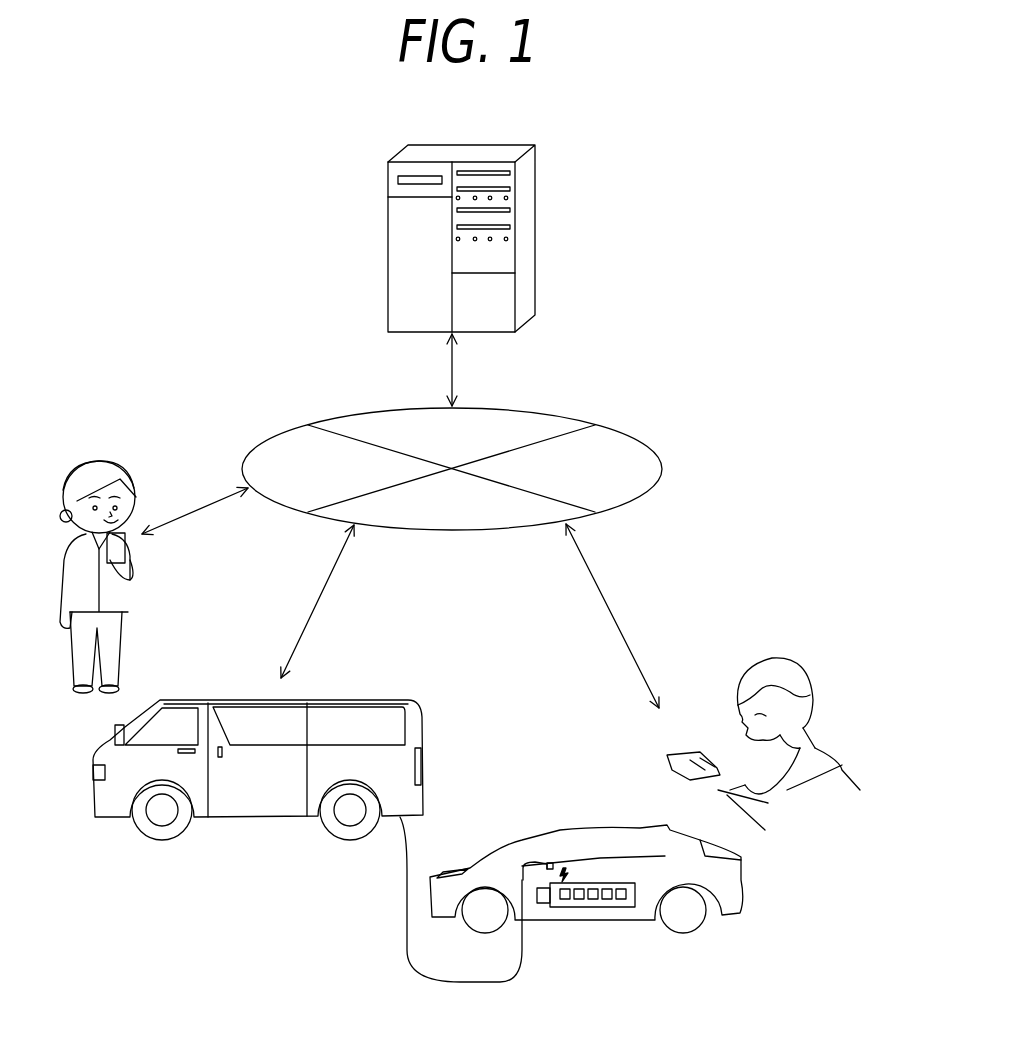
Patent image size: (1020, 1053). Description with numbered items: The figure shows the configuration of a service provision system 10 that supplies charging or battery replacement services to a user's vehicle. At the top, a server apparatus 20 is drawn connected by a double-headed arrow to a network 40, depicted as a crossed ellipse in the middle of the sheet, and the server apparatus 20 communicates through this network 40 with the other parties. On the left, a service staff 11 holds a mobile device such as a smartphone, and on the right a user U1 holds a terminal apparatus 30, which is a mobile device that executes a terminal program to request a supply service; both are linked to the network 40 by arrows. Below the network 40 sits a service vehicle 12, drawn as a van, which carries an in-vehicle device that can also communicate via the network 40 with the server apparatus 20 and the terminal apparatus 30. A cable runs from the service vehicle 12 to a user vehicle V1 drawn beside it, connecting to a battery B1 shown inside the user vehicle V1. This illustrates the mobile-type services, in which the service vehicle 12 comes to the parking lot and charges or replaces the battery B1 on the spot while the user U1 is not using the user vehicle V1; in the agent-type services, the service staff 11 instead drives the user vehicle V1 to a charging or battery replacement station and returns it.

The service provision system 10 is at (692, 296).
The service staff 11 is at (127, 577).
The service vehicle 12 is at (266, 805).
The server apparatus 20 is at (388, 245).
The terminal apparatus 30 is at (678, 767).
The network 40 is at (662, 469).
The battery B1 is at (595, 883).
The user U1 is at (817, 748).
The user vehicle V1 is at (742, 888).